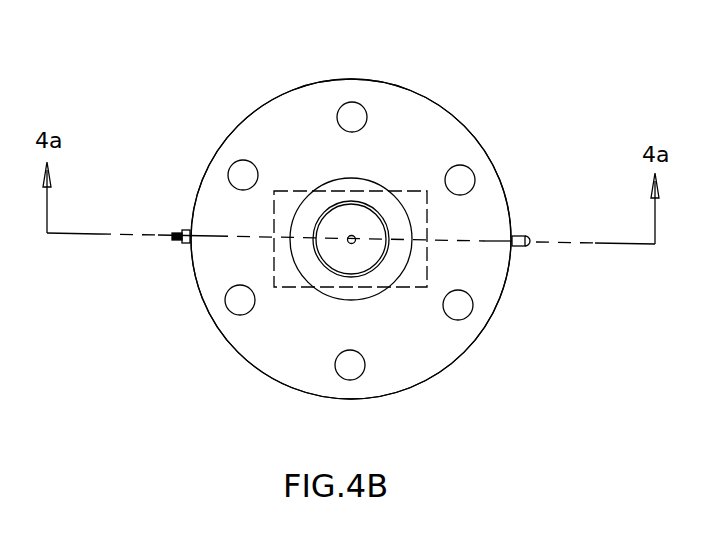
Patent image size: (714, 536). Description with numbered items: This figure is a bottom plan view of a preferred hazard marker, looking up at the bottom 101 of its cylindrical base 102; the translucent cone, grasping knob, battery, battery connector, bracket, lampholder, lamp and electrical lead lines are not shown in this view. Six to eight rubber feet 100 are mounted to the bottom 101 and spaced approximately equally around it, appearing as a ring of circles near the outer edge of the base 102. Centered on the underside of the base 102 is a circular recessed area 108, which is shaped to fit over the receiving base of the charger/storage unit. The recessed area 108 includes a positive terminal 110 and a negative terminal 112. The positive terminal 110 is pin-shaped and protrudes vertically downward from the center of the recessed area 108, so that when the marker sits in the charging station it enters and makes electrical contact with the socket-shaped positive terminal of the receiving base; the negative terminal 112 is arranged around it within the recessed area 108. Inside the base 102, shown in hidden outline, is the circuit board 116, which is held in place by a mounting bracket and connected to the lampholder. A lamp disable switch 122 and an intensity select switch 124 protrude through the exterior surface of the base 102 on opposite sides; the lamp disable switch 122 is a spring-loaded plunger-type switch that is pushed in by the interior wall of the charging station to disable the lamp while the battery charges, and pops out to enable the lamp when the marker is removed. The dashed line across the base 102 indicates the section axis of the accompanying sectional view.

The rubber feet 100 is at (352, 101).
The bottom 101 is at (410, 130).
The cylindrical base 102 is at (267, 100).
The recessed area 108 is at (302, 272).
The positive terminal 110 is at (352, 240).
The negative terminal 112 is at (372, 212).
The circuit board 116 is at (297, 188).
The lamp disable switch 122 is at (540, 238).
The intensity select switch 124 is at (172, 237).